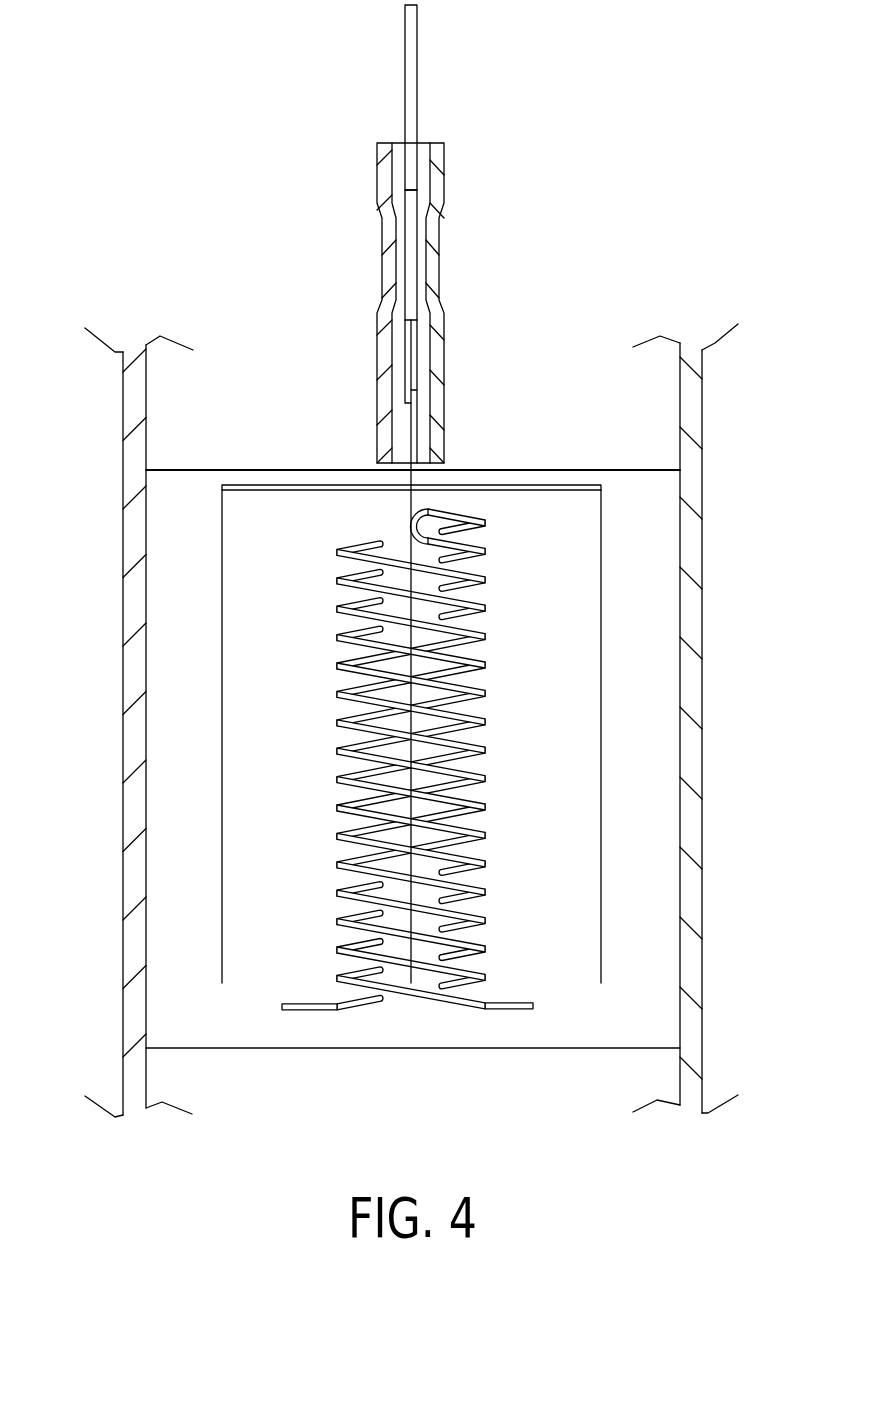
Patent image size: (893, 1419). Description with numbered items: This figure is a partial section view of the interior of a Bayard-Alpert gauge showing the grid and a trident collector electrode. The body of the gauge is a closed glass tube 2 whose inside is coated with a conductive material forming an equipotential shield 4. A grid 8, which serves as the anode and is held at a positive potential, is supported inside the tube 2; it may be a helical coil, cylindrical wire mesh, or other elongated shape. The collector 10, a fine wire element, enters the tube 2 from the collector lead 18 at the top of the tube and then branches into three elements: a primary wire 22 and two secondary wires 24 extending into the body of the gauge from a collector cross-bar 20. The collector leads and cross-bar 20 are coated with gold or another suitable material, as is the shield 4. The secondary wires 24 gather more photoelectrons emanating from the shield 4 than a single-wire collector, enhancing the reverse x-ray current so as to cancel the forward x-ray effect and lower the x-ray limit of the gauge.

The tube 2 is at (704, 923).
The equipotential shield 4 is at (679, 964).
The grid 8 is at (508, 719).
The collector 10 is at (409, 446).
The collector lead 18 is at (403, 69).
The collector cross-bar 20 is at (411, 706).
The primary wire 22 is at (408, 521).
The secondary wires 24 is at (603, 712).